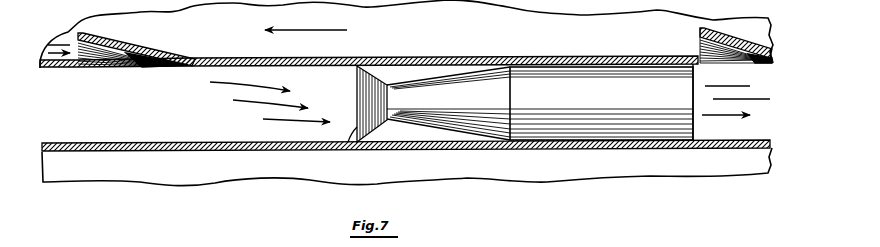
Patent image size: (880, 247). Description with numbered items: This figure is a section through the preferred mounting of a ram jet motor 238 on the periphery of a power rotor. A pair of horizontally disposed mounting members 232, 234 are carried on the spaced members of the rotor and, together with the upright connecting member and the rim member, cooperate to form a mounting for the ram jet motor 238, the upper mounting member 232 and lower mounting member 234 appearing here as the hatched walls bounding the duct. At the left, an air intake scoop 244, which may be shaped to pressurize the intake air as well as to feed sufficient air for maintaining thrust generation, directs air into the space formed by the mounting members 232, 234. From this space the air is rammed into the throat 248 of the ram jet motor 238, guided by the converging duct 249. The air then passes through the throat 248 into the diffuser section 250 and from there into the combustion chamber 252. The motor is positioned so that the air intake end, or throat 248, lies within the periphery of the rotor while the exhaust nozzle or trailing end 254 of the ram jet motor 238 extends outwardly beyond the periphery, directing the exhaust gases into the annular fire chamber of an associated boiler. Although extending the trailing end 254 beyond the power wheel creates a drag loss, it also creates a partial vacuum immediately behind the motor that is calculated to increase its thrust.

The mounting member 232 is at (263, 58).
The mounting member 234 is at (183, 151).
The ram jet motor 238 is at (585, 122).
The air intake scoop 244 is at (125, 46).
The throat 248 is at (387, 117).
The converging duct 249 is at (348, 142).
The diffuser section 250 is at (465, 120).
The combustion chamber 252 is at (625, 75).
The trailing end 254 is at (683, 132).